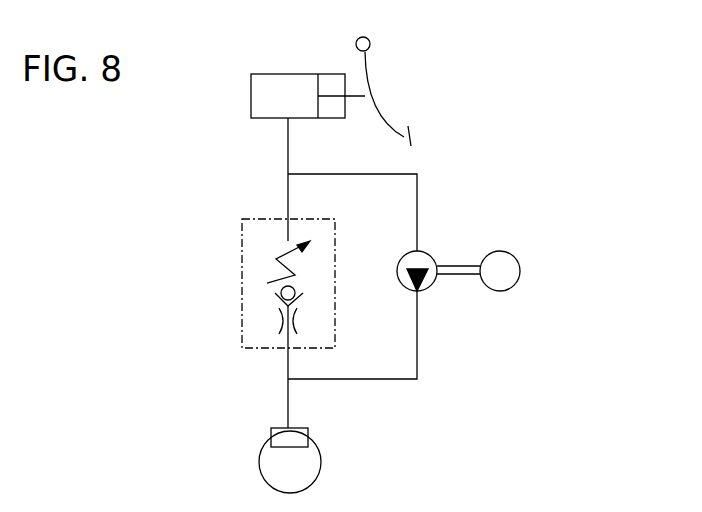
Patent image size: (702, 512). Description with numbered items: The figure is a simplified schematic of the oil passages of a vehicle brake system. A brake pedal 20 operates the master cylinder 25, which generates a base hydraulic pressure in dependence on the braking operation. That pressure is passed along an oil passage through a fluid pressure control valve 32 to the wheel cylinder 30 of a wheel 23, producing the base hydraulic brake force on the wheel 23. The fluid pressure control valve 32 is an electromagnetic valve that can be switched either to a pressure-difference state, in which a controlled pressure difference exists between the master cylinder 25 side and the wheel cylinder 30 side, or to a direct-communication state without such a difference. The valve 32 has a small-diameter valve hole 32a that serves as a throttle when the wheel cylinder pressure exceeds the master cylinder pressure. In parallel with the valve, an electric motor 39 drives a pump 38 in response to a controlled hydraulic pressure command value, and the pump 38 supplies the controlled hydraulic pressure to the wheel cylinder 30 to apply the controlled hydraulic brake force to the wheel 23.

The brake pedal 20 is at (369, 70).
The wheel 23 is at (315, 457).
The master cylinder 25 is at (283, 73).
The wheel cylinder 30 is at (278, 425).
The fluid pressure control valve 32 is at (257, 260).
The small-diameter valve hole 32a is at (277, 317).
The pump 38 is at (420, 250).
The electric motor 39 is at (522, 268).